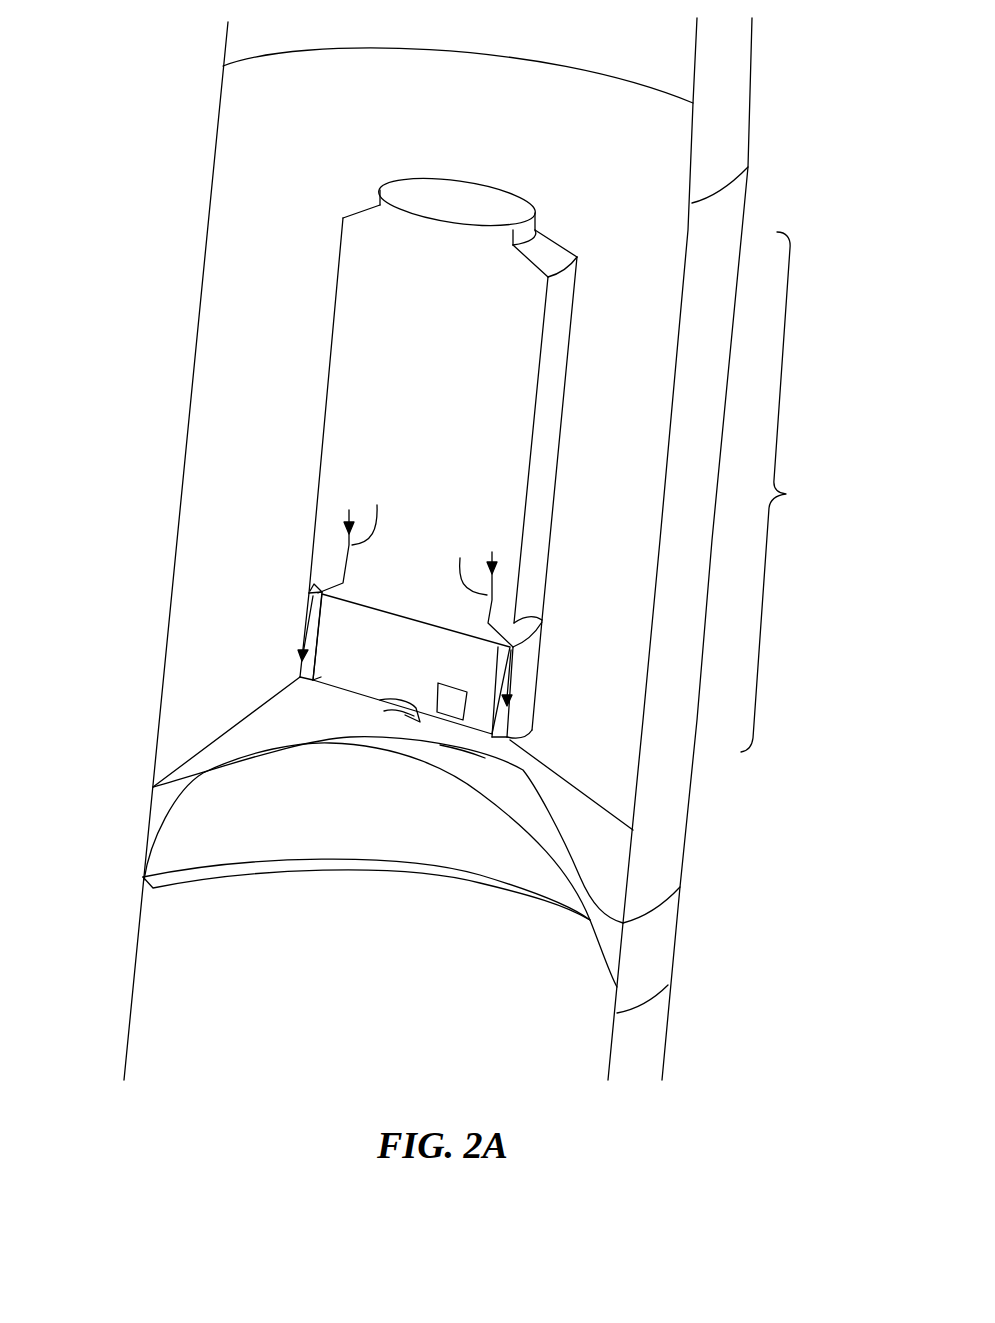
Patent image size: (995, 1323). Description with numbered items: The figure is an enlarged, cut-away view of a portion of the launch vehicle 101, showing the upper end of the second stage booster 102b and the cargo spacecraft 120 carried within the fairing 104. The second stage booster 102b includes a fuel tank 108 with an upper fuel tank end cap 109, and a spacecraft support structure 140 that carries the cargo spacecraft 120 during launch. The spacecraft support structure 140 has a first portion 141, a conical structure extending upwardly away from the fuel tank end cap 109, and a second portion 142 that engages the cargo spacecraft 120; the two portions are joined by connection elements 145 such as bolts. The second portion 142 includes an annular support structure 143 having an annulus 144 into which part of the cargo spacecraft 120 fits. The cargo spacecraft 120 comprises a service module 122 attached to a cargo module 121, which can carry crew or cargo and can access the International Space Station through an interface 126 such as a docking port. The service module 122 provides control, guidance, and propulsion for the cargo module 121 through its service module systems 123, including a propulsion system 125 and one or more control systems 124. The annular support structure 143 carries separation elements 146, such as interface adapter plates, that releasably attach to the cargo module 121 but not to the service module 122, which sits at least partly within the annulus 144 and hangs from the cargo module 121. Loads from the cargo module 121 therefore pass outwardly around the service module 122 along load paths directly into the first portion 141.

The launch vehicle 101 is at (113, 357).
The second stage booster 102b is at (662, 1073).
The fairing 104 is at (748, 203).
The fuel tank 108 is at (601, 1013).
The fuel tank end cap 109 is at (150, 810).
The cargo spacecraft 120 is at (786, 492).
The cargo module 121 is at (530, 485).
The service module 122 is at (417, 620).
The service module systems 123 is at (465, 752).
The control systems 124 is at (438, 683).
The propulsion system 125 is at (365, 690).
The interface 126 is at (477, 198).
The spacecraft support structure 140 is at (244, 636).
The first portion 141 is at (200, 752).
The second portion 142 is at (296, 630).
The annular support structure 143 is at (305, 593).
The annulus 144 is at (308, 697).
The connection elements 145 is at (535, 712).
The separation elements 146 is at (318, 592).